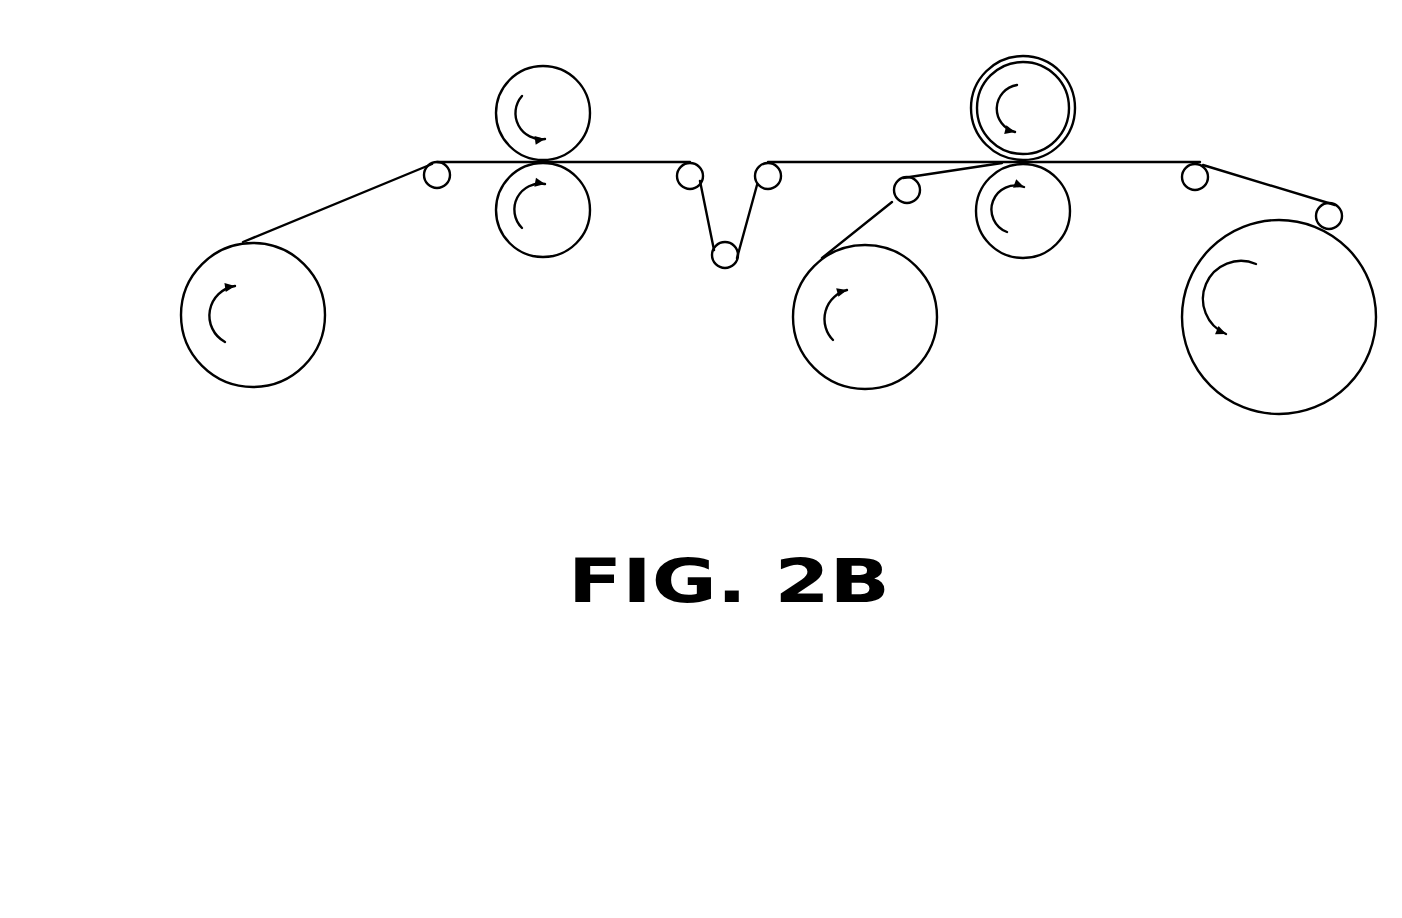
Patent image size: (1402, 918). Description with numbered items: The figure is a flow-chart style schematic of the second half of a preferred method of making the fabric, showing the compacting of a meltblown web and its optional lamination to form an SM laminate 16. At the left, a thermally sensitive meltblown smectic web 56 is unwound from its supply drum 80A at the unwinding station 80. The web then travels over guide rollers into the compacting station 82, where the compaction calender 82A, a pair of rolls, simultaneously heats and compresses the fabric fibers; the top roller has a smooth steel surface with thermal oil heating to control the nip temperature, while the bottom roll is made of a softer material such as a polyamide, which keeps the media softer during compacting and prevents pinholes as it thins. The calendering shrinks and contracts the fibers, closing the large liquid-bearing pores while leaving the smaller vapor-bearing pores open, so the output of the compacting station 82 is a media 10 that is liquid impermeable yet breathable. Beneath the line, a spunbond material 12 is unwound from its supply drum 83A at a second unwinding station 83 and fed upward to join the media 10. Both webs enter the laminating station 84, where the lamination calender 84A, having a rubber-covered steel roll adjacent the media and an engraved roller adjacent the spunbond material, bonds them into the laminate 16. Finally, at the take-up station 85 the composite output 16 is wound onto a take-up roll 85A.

The media 10 is at (838, 127).
The spunbond material 12 is at (878, 207).
The SM laminate 16 is at (1148, 162).
The thermally sensitive meltblown smectic web 56 is at (340, 200).
The unwinding station 80 is at (308, 367).
The supply drum 80A is at (185, 283).
The compacting station 82 is at (562, 252).
The compaction calender 82A is at (495, 202).
The unwinding station 83 is at (855, 388).
The supply drum 83A is at (793, 310).
The laminating station 84 is at (1020, 258).
The lamination calender 84A is at (1068, 194).
The take-up station 85 is at (1276, 417).
The take-up roll 85A is at (1183, 302).